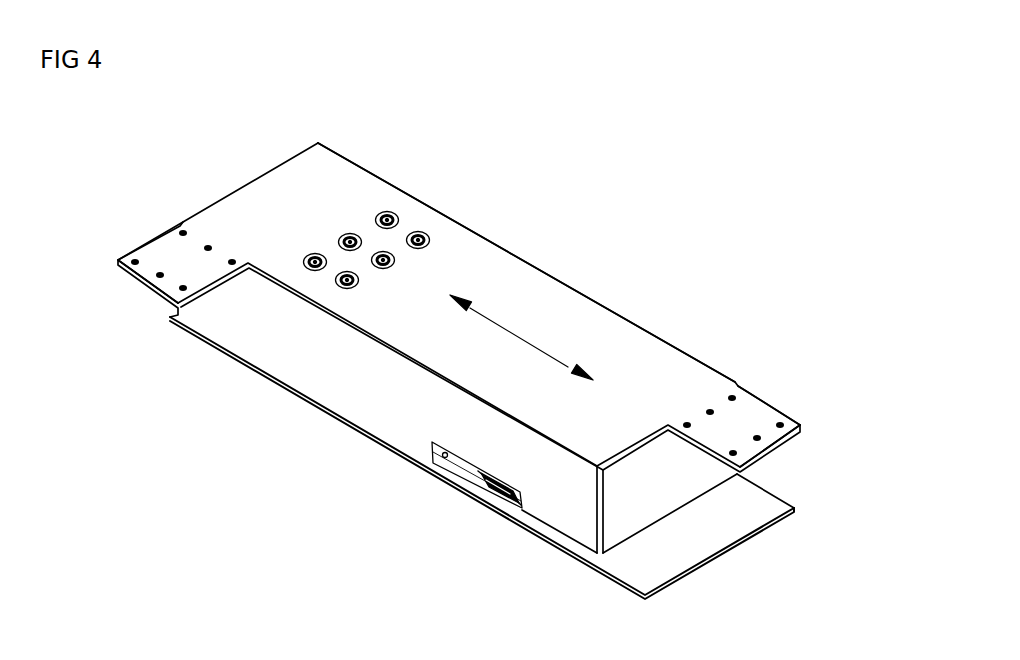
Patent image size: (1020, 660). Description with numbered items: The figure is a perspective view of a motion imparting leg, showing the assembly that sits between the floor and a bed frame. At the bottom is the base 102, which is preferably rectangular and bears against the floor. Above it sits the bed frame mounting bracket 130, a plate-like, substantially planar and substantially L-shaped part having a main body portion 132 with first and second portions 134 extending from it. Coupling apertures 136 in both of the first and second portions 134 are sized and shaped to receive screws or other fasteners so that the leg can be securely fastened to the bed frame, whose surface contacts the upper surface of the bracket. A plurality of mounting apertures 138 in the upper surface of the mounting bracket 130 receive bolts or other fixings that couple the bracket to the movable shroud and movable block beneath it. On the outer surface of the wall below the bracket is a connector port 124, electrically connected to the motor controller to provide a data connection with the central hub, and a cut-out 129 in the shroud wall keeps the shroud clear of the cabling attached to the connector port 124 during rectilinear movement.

The base 102 is at (676, 553).
The connector port 124 is at (487, 493).
The cut-out 129 is at (434, 465).
The bed frame mounting bracket 130 is at (623, 317).
The main body portion 132 is at (480, 273).
The first and second portions 134 is at (165, 248).
The coupling apertures 136 is at (142, 280).
The mounting apertures 138 is at (385, 211).